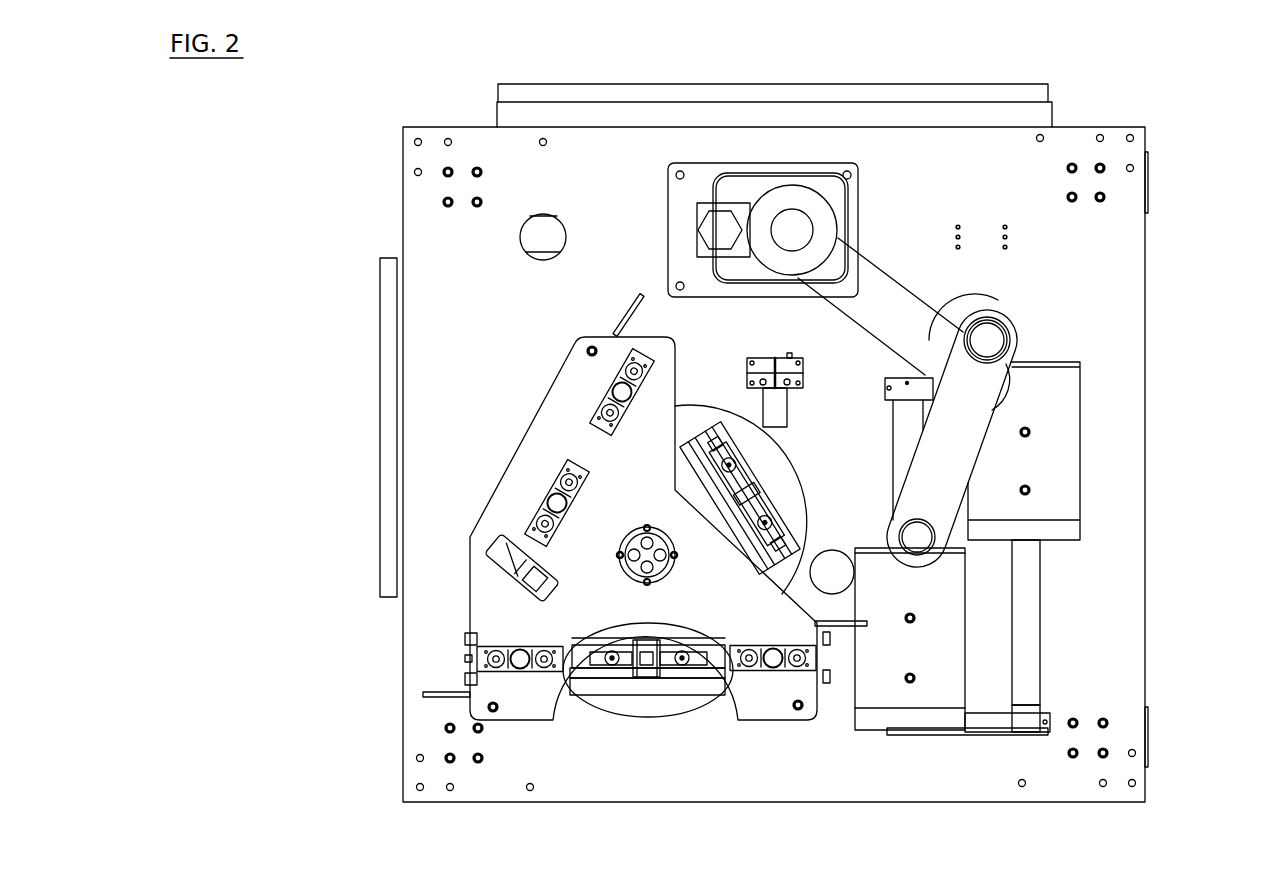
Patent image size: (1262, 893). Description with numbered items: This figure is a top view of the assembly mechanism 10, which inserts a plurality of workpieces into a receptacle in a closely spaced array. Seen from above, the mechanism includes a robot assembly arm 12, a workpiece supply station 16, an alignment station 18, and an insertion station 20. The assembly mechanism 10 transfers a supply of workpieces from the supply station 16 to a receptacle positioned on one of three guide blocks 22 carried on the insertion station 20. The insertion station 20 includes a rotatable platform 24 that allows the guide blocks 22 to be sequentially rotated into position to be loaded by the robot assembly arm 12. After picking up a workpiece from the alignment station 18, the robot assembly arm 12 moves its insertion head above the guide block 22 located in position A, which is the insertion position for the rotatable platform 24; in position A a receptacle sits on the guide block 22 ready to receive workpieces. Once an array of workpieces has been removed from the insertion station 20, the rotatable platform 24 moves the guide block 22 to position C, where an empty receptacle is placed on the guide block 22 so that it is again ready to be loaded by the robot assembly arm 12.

The assembly mechanism 10 is at (1145, 285).
The robot assembly arm 12 is at (863, 273).
The workpiece supply station 16 is at (1060, 460).
The alignment station 18 is at (777, 345).
The insertion station 20 is at (772, 473).
The guide block 22 is at (767, 517).
The rotatable platform 24 is at (632, 705).
The position A is at (706, 427).
The position C is at (680, 697).